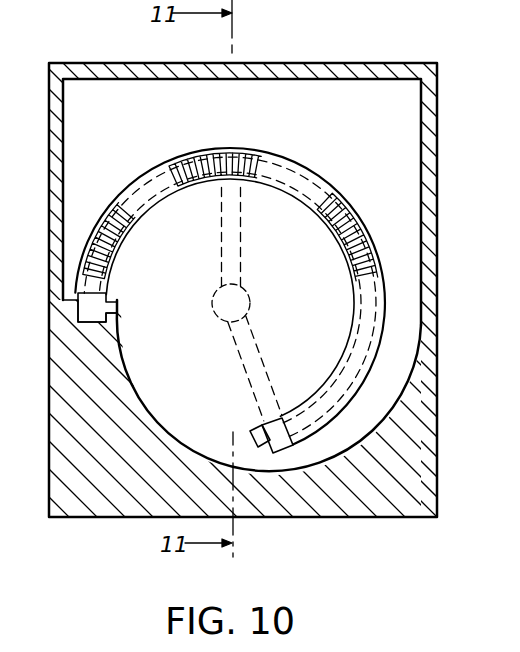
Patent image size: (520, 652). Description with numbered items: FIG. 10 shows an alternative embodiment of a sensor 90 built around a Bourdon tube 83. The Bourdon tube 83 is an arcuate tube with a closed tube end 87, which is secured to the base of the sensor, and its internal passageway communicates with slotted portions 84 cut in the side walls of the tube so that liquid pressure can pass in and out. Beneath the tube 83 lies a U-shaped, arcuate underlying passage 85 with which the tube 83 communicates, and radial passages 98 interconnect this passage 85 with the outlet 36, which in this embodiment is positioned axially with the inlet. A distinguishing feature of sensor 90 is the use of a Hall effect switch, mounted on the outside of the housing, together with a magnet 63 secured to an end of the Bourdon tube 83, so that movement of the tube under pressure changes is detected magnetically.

The sensor 90 is at (437, 200).
The Bourdon tube 83 is at (315, 177).
The underlying passage 85 is at (293, 152).
The slotted portions 84 is at (343, 215).
The tube end 87 is at (120, 304).
The magnet 63 is at (250, 432).
The outlet 36 is at (250, 300).
The radial passages 98 is at (241, 259).